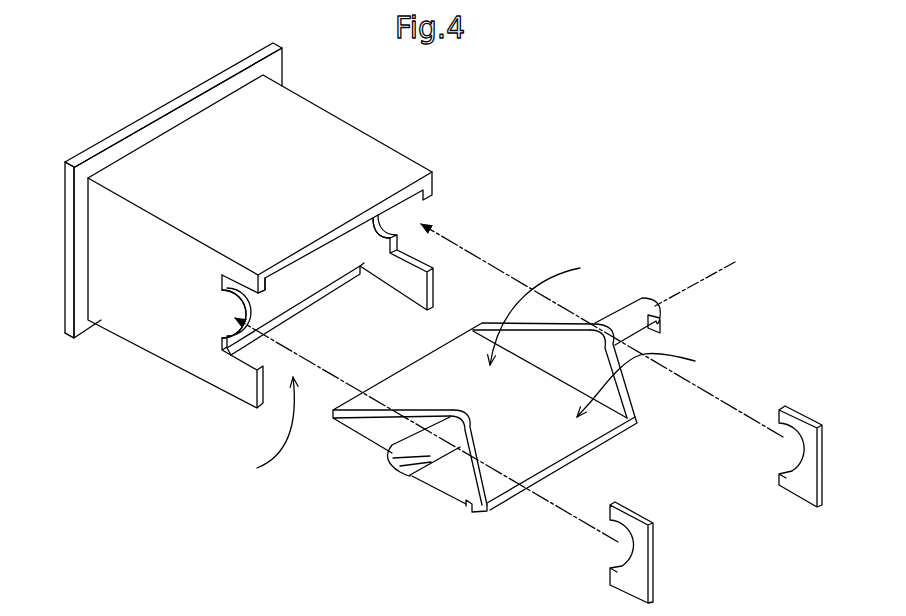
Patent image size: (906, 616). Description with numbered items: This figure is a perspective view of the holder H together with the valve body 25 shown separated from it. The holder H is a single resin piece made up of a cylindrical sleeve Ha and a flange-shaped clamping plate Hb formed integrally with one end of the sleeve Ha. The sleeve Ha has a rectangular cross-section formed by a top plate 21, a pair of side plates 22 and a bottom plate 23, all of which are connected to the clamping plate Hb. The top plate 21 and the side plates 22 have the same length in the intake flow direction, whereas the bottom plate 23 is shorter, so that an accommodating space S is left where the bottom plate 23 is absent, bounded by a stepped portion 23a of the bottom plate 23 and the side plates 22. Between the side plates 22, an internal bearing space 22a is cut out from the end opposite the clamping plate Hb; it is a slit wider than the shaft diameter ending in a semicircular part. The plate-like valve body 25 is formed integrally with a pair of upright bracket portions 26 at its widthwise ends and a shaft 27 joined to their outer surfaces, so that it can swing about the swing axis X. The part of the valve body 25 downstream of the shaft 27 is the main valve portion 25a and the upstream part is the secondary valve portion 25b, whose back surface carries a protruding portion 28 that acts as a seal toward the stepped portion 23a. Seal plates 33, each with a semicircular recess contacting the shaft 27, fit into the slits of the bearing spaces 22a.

The holder H is at (143, 84).
The sleeve Ha is at (183, 178).
The clamping plate Hb is at (84, 150).
The top plate 21 is at (365, 158).
The side plates 22 is at (140, 315).
The internal bearing space 22a is at (427, 218).
The bottom plate 23 is at (320, 277).
The stepped portion 23a is at (293, 308).
The valve body 25 is at (634, 442).
The main valve portion 25a is at (556, 305).
The secondary valve portion 25b is at (657, 381).
The bracket portions 26 is at (604, 392).
The shaft 27 is at (655, 317).
The protruding portion 28 is at (475, 512).
The seal plate 33 is at (803, 412).
The accommodating space S is at (264, 432).
The swing axis X is at (693, 284).